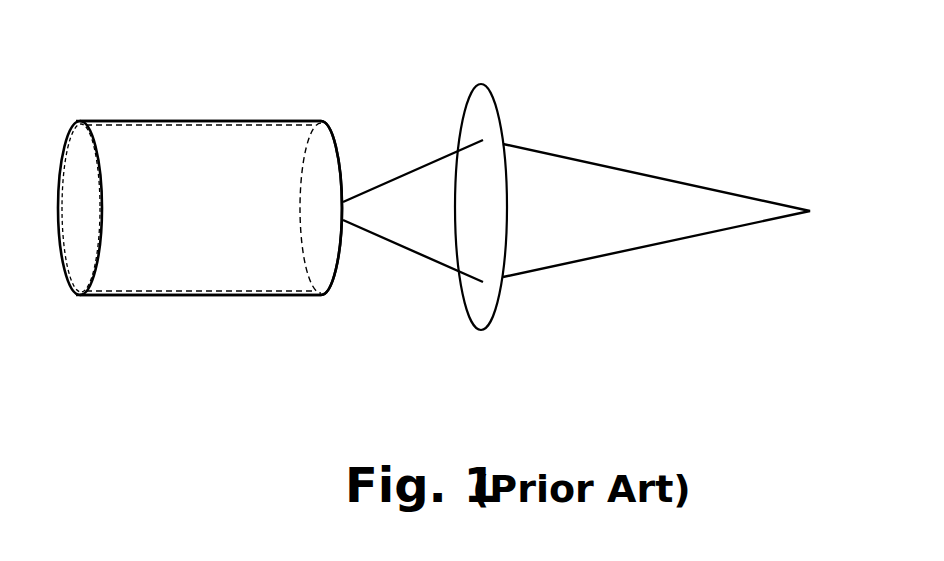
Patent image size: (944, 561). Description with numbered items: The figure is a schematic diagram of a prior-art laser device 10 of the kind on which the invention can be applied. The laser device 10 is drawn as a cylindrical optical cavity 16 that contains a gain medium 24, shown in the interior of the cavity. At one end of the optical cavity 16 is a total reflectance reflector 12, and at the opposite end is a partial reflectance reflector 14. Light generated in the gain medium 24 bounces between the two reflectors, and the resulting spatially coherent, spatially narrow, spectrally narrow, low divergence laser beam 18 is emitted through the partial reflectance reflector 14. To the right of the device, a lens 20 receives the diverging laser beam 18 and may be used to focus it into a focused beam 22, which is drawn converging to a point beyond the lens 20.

The laser device 10 is at (243, 104).
The total reflectance reflector 12 is at (75, 150).
The partial reflectance reflector 14 is at (335, 145).
The optical cavity 16 is at (183, 147).
The laser beam 18 is at (405, 247).
The lens 20 is at (493, 98).
The focused beam 22 is at (618, 253).
The gain medium 24 is at (204, 223).